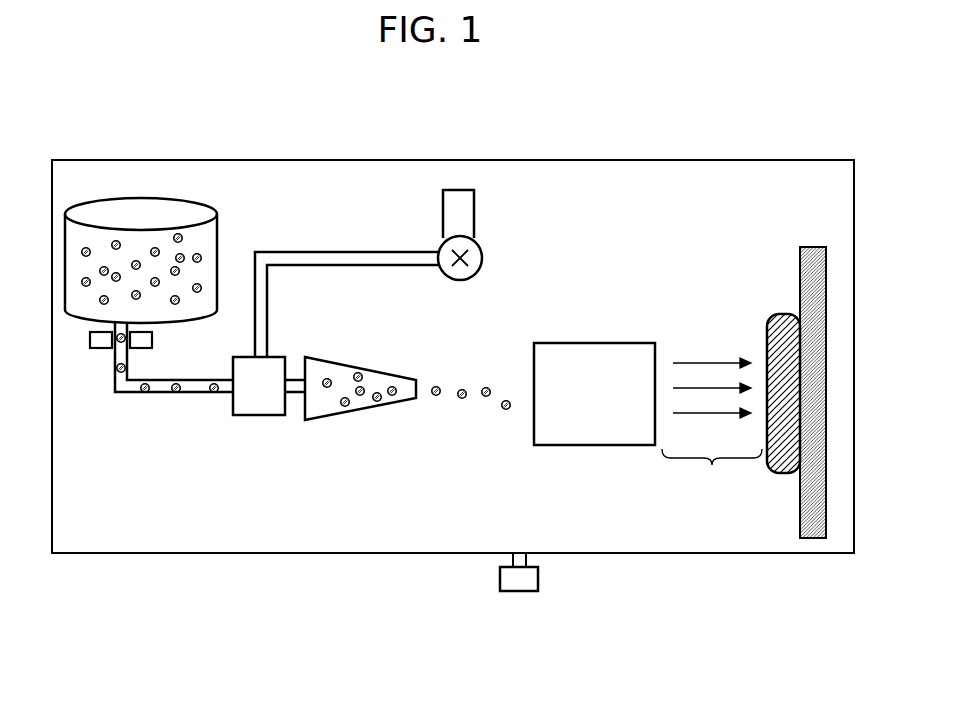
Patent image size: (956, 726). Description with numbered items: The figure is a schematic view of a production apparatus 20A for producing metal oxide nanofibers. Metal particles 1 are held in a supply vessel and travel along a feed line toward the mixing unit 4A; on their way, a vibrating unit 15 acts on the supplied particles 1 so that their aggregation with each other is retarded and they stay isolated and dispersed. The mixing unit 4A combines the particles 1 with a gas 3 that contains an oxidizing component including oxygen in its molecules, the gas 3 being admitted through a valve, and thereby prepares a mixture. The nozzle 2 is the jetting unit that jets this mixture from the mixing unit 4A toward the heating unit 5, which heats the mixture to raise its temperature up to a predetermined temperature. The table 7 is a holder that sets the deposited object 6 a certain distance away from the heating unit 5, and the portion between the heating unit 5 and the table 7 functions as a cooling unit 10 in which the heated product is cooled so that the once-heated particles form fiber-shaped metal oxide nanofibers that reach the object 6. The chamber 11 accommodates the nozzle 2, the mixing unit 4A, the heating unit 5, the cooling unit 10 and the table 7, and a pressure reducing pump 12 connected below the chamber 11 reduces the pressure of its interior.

The metal particles 1 is at (197, 258).
The nozzle 2 is at (363, 400).
The gas 3 is at (485, 254).
The mixing unit 4A is at (252, 402).
The heating unit 5 is at (595, 352).
The object 6 is at (790, 320).
The table 7 is at (815, 257).
The cooling unit 10 is at (712, 426).
The chamber 11 is at (672, 160).
The pressure reducing pump 12 is at (530, 580).
The vibrating unit 15 is at (137, 347).
The apparatus for producing metal oxide nanofibers 20A is at (740, 145).